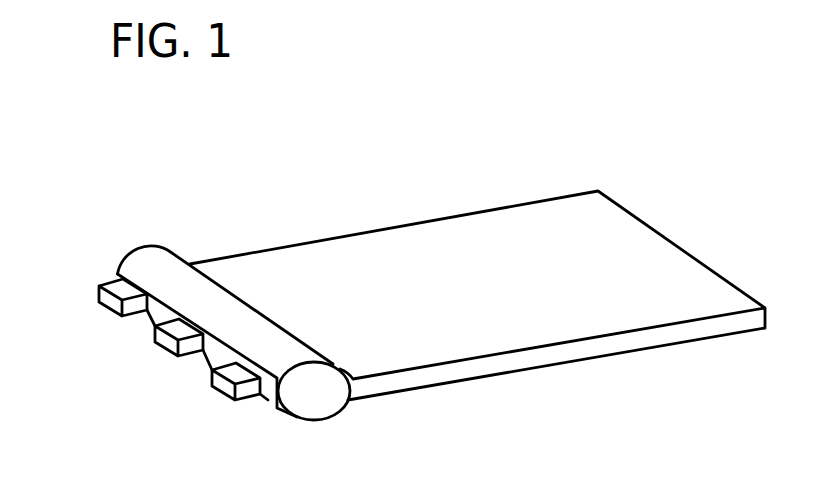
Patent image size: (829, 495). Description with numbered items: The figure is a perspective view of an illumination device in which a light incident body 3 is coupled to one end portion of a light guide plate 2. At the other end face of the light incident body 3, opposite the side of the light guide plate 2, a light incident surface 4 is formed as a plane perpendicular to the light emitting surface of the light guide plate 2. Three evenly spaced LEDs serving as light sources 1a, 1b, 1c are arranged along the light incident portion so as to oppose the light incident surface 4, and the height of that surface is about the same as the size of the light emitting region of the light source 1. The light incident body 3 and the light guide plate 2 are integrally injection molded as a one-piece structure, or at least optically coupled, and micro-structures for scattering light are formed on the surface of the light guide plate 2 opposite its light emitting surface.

The light source 1 is at (150, 360).
The light source 1a is at (99, 303).
The light source 1b is at (155, 341).
The light source 1c is at (211, 400).
The light guide plate 2 is at (423, 233).
The light incident body 3 is at (312, 398).
The light incident surface 4 is at (267, 388).